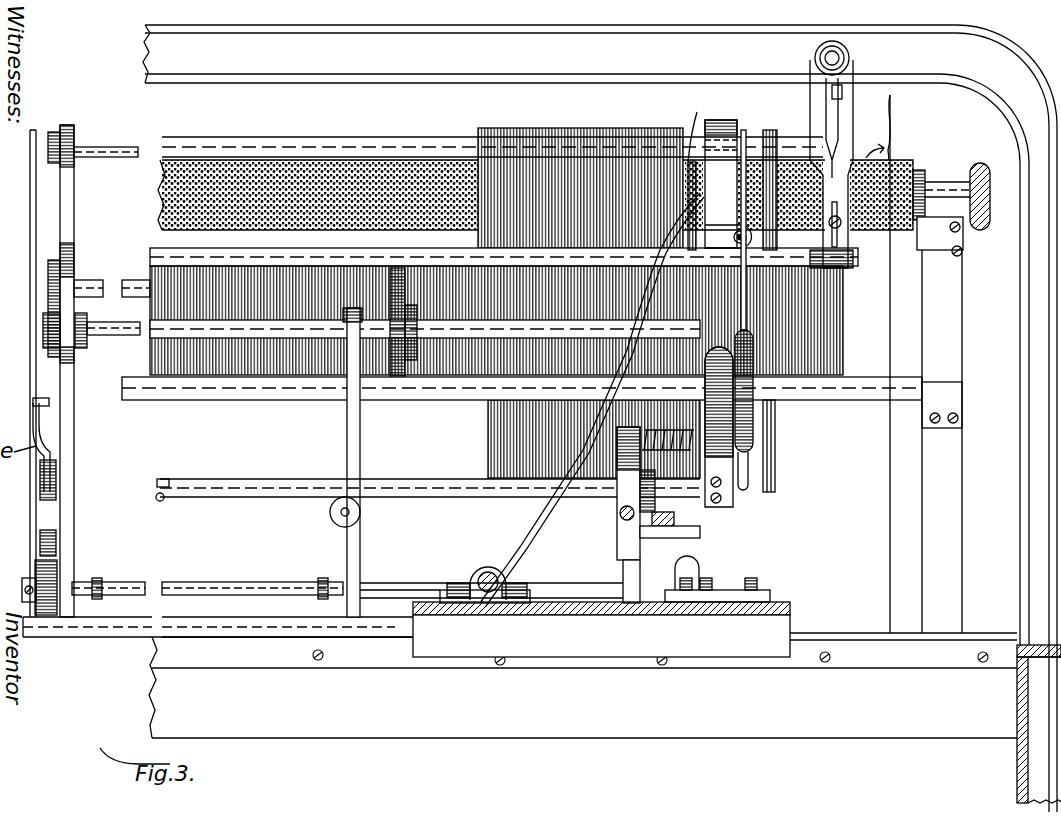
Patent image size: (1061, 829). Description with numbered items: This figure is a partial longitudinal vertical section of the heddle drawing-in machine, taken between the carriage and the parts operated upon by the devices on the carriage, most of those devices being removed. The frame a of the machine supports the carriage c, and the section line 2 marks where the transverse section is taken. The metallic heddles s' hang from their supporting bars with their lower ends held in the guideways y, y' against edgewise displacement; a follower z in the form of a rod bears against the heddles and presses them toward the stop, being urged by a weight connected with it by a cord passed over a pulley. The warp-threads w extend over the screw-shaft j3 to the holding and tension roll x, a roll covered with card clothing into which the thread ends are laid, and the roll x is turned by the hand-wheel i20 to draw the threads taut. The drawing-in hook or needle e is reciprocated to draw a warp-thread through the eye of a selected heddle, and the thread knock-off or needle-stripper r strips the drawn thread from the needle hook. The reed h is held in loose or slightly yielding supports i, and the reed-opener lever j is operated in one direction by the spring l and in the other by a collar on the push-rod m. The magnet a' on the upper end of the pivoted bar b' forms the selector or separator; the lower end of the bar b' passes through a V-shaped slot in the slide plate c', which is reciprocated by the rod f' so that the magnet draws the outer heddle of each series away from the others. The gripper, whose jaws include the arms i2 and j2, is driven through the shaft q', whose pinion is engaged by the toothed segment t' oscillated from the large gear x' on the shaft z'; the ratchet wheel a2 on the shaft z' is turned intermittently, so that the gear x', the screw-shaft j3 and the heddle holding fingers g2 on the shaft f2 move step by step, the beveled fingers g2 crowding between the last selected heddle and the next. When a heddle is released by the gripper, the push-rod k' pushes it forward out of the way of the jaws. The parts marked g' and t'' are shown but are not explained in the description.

The frame a is at (602, 418).
The section line 2 is at (598, 678).
The gripper arm i2 is at (30, 245).
The large gear x' is at (43, 308).
The shaft f2 is at (116, 147).
The screw-shaft j3 is at (100, 280).
The hook lever g' is at (28, 449).
The toothed segment t' is at (28, 544).
The collar t'' is at (28, 585).
The shaft q' is at (207, 578).
The metallic heddles s' is at (573, 288).
The guideway y' is at (492, 133).
The push-rod k' is at (513, 286).
The shaft z' is at (496, 359).
The ratchet wheel a2 is at (397, 282).
The reed h is at (417, 388).
The follower z is at (428, 474).
The thread knock-off or needle-stripper r is at (592, 399).
The guideway y is at (500, 548).
The spring l is at (617, 470).
The push-rod m is at (640, 528).
The bar b' is at (676, 509).
The rod f' is at (708, 532).
The slide plate c' is at (729, 570).
The carriage c is at (615, 622).
The warp-threads w is at (890, 556).
The holding and tension roll x is at (910, 188).
The hand-wheel i20 is at (982, 179).
The supports i is at (850, 238).
The magnet a' is at (728, 184).
The heddle holding fingers g2 is at (691, 168).
The drawing-in hook or needle e is at (745, 322).
The gripper arm j2 is at (733, 415).
The reed-opener lever j is at (776, 408).